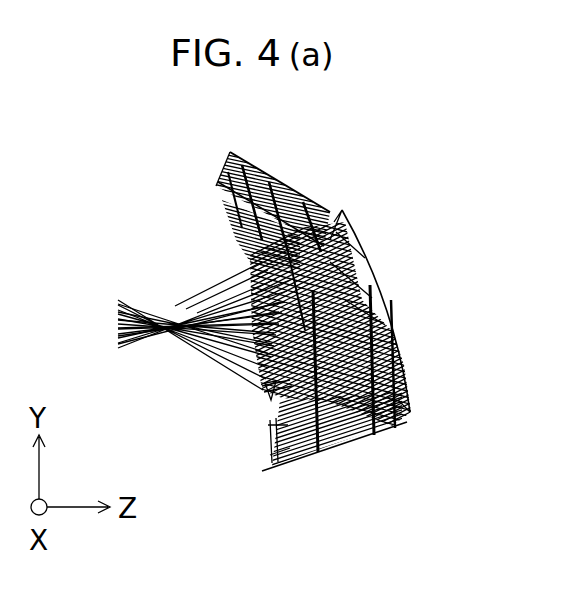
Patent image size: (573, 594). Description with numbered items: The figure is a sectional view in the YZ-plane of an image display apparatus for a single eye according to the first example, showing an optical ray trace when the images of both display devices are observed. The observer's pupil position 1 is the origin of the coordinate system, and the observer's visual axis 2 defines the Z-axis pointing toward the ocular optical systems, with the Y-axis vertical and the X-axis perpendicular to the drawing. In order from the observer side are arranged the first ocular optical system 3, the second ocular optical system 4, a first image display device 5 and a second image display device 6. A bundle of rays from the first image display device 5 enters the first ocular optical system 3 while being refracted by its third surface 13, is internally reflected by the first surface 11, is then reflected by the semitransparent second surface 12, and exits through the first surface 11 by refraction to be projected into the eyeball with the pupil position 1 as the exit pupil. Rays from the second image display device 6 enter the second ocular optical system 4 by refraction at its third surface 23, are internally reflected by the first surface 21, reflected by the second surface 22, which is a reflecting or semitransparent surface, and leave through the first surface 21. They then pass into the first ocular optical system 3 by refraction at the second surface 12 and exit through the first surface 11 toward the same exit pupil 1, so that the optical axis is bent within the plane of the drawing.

The observer's pupil position 1 is at (150, 318).
The observer's visual axis 2 is at (207, 323).
The first ocular optical system 3 is at (270, 387).
The second ocular optical system 4 is at (368, 290).
The first image display device 5 is at (263, 168).
The second image display device 6 is at (360, 440).
The first surface of the first ocular optical system 11 is at (238, 234).
The second surface of the first ocular optical system 12 is at (267, 390).
The third surface of the first ocular optical system 13 is at (292, 203).
The first surface of the second ocular optical system 21 is at (264, 398).
The second surface of the second ocular optical system 22 is at (353, 224).
The third surface of the second ocular optical system 23 is at (402, 411).